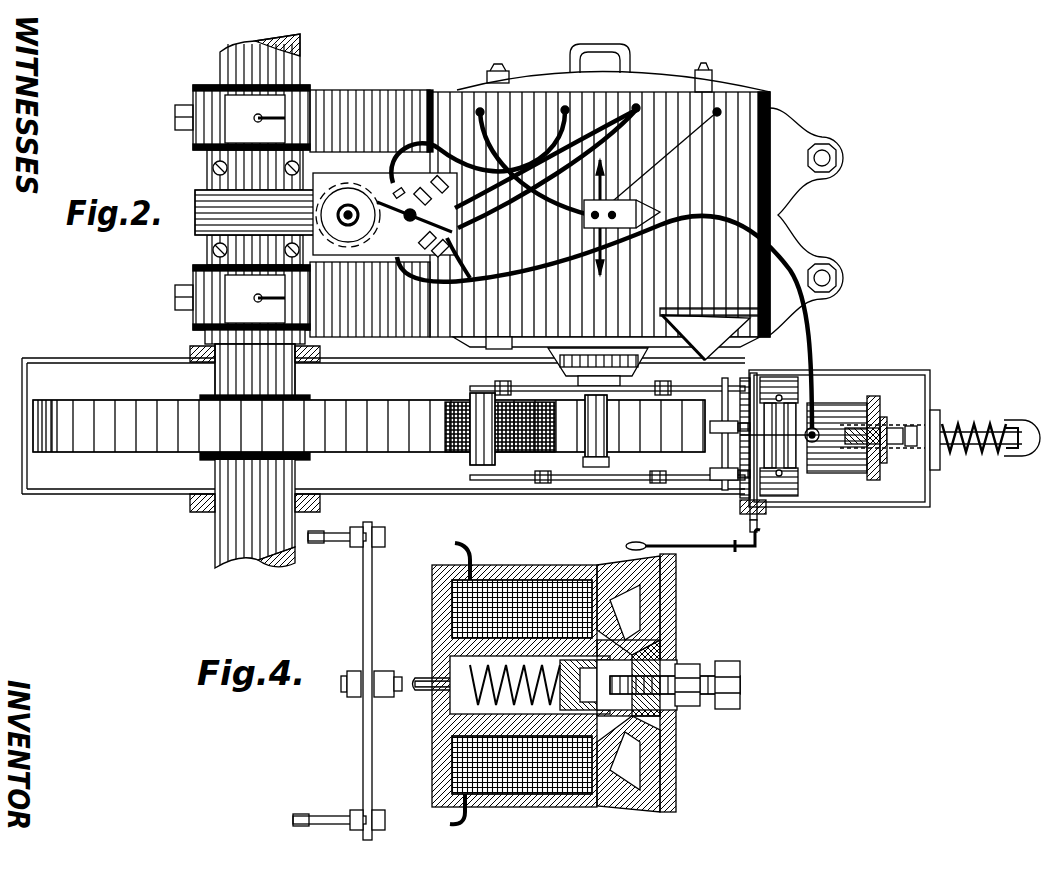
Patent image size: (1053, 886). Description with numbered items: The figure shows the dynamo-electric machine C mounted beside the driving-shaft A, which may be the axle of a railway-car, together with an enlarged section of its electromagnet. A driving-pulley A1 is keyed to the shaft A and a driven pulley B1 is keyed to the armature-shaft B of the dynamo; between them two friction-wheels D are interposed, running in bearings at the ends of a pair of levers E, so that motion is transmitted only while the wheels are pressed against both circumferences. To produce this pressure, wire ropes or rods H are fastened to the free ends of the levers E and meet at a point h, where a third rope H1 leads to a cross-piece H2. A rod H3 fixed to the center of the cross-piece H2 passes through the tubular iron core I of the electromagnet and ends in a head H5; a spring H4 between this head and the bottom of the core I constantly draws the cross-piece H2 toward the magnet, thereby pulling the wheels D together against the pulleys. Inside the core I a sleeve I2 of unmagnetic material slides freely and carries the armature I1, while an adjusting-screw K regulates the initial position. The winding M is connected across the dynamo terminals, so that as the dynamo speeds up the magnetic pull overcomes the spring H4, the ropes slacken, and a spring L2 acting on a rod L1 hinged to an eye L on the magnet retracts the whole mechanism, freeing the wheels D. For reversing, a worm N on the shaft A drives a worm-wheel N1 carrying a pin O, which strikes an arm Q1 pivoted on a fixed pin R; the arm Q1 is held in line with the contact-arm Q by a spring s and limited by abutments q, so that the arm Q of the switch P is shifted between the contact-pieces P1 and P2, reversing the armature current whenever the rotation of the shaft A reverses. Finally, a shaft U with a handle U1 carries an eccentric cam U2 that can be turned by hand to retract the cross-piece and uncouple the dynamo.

In FIG. 2, the driving-shaft A is at (298, 70).
In FIG. 2, the driving-pulley A1 is at (369, 426).
In FIG. 2, the worm N is at (195, 210).
In FIG. 2, the worm-wheel N1 is at (348, 185).
In FIG. 2, the pin O is at (348, 215).
In FIG. 2, the fixed pin R is at (414, 226).
In FIG. 2, the abutments q is at (402, 194).
In FIG. 2, the spring s is at (431, 198).
In FIG. 2, the contact-arm Q is at (454, 261).
In FIG. 2, the second arm Q1 is at (456, 239).
In FIG. 2, the switch P is at (478, 147).
In FIG. 2, the contact-piece P1 is at (455, 175).
In FIG. 2, the contact-piece P2 is at (589, 329).
In FIG. 2, the dynamo-electric machine C is at (576, 195).
In FIG. 2, the meeting point of ropes h is at (562, 349).
In FIG. 2, the levers E is at (678, 395).
In FIG. 2, the wire ropes or rods H is at (497, 384).
In FIG. 2, the third rope H1 is at (702, 398).
In FIG. 4, the third rope H1 is at (337, 538).
In FIG. 4, the cross-piece H2 is at (370, 767).
In FIG. 2, the rod H3 is at (733, 415).
In FIG. 4, the rod H3 is at (428, 680).
In FIG. 2, the spring H4 is at (733, 462).
In FIG. 4, the spring H4 is at (470, 706).
In FIG. 4, the head H5 is at (640, 720).
In FIG. 2, the armature-shaft B is at (597, 452).
In FIG. 2, the driven pulley B1 is at (600, 426).
In FIG. 2, the friction-wheels D is at (468, 464).
In FIG. 2, the electromagnet core I is at (850, 412).
In FIG. 4, the electromagnet core I is at (547, 570).
In FIG. 2, the armature I1 is at (883, 420).
In FIG. 4, the armature I1 is at (623, 607).
In FIG. 4, the sleeve I2 is at (673, 710).
In FIG. 4, the adjusting-screw K is at (677, 670).
In FIG. 4, the winding M is at (448, 605).
In FIG. 2, the eye L is at (868, 472).
In FIG. 2, the rod L1 is at (910, 447).
In FIG. 2, the spring L2 is at (985, 430).
In FIG. 2, the shaft U is at (758, 512).
In FIG. 2, the handle U1 is at (724, 549).
In FIG. 2, the eccentric cam U2 is at (747, 490).